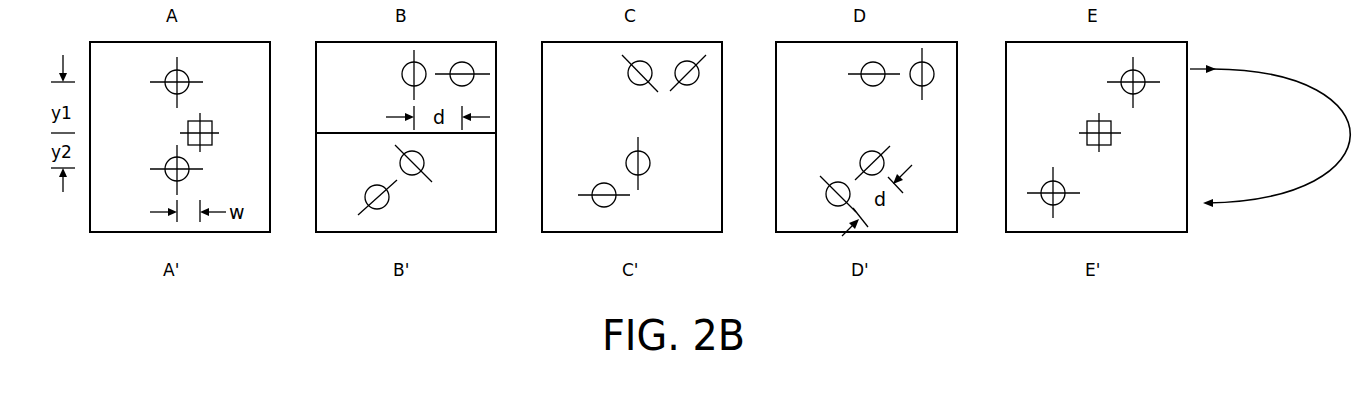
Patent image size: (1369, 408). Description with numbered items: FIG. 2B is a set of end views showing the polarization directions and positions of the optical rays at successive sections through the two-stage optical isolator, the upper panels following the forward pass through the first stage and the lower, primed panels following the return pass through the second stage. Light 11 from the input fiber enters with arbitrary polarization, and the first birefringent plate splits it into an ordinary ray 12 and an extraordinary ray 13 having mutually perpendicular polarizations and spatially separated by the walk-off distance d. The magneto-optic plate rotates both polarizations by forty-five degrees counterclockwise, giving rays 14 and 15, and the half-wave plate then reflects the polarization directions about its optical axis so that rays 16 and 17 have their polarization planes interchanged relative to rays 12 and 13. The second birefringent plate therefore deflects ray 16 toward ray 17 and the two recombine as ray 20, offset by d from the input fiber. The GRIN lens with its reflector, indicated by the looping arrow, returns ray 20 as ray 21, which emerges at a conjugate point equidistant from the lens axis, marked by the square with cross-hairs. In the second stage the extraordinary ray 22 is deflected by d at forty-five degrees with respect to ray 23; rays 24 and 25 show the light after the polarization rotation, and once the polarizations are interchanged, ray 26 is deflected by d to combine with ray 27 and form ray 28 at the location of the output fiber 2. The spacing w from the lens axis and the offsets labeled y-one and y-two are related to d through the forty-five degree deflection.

The single-mode optical fiber 2 is at (172, 164).
The alignment mark with crosshair 11 is at (189, 74).
The ordinary ray 12 is at (403, 70).
The extraordinary ray 13 is at (460, 62).
The ray 14 is at (629, 66).
The ray 15 is at (692, 86).
The ray 16 is at (862, 66).
The ray 17 is at (916, 87).
The ray 20 is at (1121, 72).
The ray 21 is at (1064, 185).
The extraordinary ray 22 is at (836, 181).
The alignment mark with diagonal line 23 is at (882, 156).
The alignment mark with horizontal line 24 is at (615, 203).
The alignment mark with vertical line 25 is at (650, 157).
The ray 26 is at (390, 200).
The ray 27 is at (424, 157).
The ray 28 is at (189, 163).